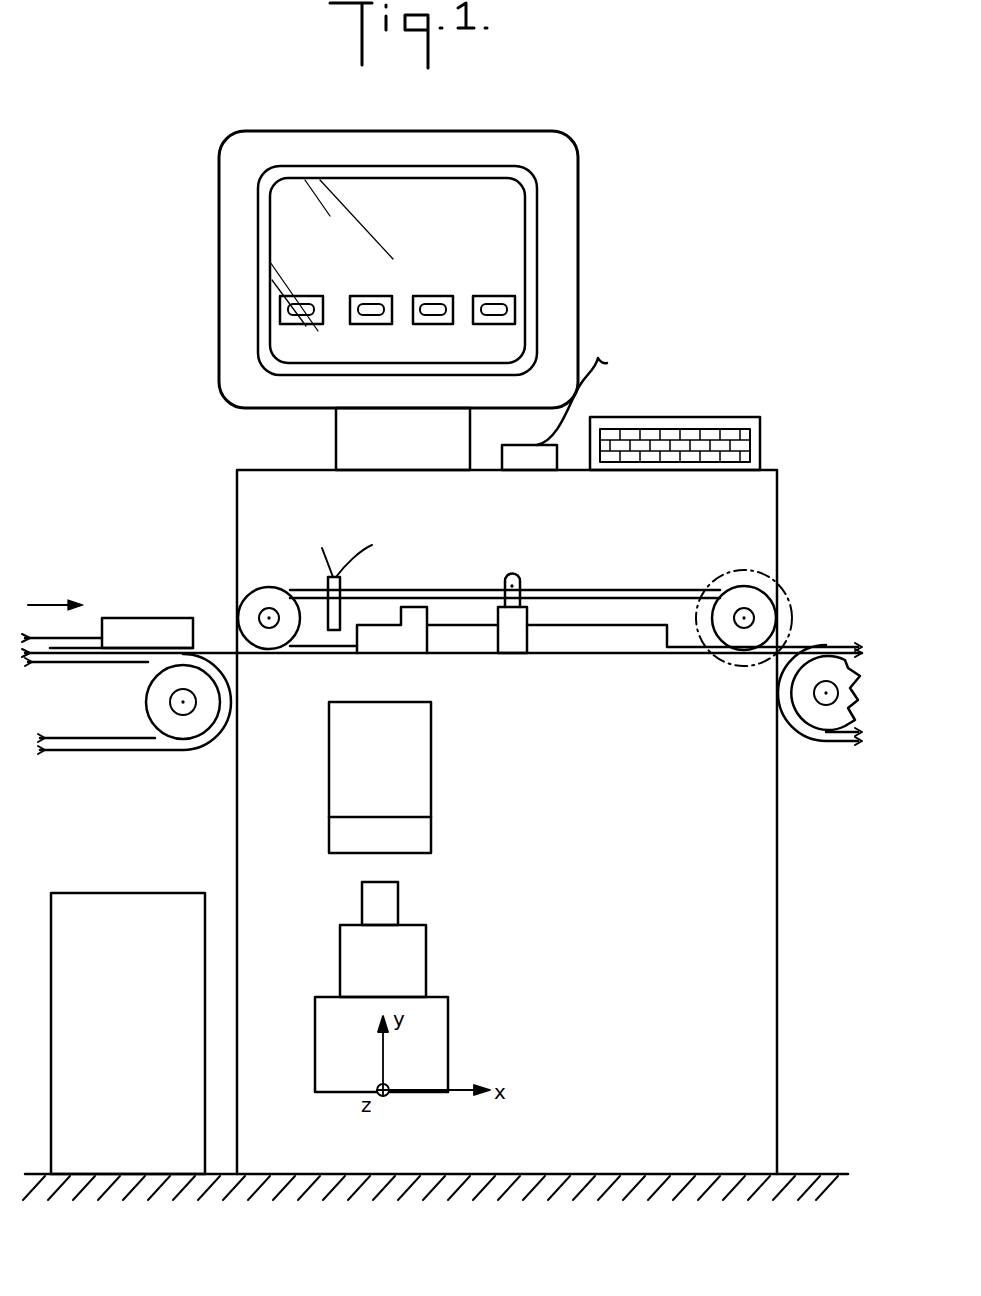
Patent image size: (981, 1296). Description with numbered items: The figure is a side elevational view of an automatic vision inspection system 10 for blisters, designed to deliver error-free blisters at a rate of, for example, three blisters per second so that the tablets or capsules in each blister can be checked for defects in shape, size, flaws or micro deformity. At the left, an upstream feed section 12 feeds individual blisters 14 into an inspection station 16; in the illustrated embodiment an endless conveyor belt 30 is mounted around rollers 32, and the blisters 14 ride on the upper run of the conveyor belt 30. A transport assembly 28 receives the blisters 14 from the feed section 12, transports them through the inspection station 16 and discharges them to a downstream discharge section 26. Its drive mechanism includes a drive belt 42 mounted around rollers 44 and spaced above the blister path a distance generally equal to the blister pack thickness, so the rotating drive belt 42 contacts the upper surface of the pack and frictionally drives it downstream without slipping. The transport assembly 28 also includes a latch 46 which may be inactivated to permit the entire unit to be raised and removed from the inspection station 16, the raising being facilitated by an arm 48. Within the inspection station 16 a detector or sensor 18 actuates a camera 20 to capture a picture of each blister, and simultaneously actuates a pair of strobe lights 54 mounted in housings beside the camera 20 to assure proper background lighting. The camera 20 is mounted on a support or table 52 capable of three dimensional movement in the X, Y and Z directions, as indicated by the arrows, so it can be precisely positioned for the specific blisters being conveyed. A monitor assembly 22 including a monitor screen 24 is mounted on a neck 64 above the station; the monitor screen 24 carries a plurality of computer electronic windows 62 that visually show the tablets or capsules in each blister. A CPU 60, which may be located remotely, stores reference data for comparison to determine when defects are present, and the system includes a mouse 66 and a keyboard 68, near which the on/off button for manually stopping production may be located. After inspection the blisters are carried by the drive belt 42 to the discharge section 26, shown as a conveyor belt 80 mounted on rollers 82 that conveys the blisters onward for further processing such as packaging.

The automatic vision inspection system 10 is at (612, 286).
The upstream feed section 12 is at (176, 577).
The blister 14 is at (576, 638).
The inspection station 16 is at (690, 397).
The detector or sensor 18 is at (350, 558).
The camera 20 is at (415, 948).
The monitor assembly 22 is at (598, 401).
The monitor screen 24 is at (507, 223).
The downstream discharge section 26 is at (808, 630).
The transport assembly 28 is at (636, 667).
The conveyor belt 30 is at (85, 752).
The rollers 32 is at (183, 740).
The drive belt 42 is at (618, 596).
The rollers 44 is at (768, 610).
The latch 46 is at (427, 607).
The arm 48 is at (520, 580).
The support or table 52 is at (438, 1024).
The strobe lights 54 is at (427, 832).
The CPU 60 is at (122, 897).
The computer electronic windows 62 is at (478, 297).
The neck 64 is at (348, 438).
The mouse 66 is at (516, 470).
The keyboard 68 is at (740, 445).
The conveyor belt 80 is at (828, 738).
The rollers 82 is at (800, 700).